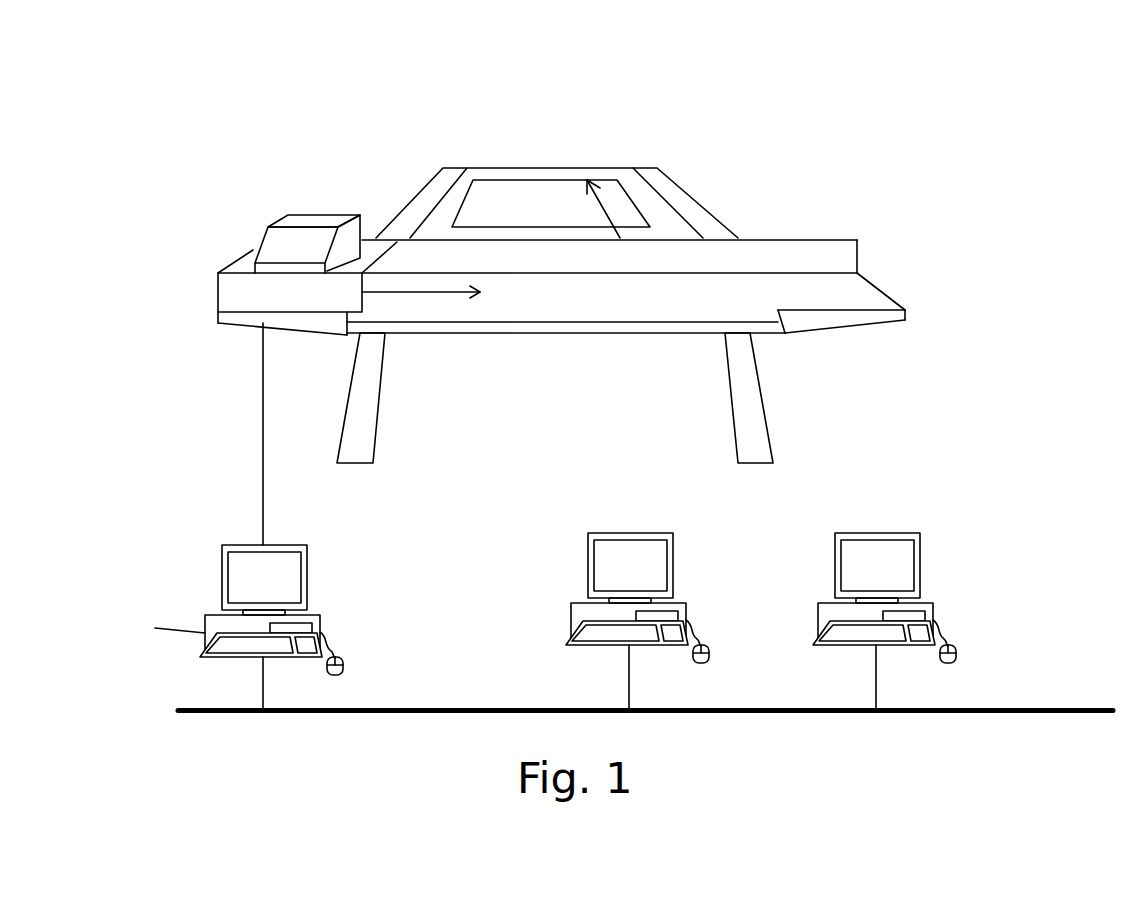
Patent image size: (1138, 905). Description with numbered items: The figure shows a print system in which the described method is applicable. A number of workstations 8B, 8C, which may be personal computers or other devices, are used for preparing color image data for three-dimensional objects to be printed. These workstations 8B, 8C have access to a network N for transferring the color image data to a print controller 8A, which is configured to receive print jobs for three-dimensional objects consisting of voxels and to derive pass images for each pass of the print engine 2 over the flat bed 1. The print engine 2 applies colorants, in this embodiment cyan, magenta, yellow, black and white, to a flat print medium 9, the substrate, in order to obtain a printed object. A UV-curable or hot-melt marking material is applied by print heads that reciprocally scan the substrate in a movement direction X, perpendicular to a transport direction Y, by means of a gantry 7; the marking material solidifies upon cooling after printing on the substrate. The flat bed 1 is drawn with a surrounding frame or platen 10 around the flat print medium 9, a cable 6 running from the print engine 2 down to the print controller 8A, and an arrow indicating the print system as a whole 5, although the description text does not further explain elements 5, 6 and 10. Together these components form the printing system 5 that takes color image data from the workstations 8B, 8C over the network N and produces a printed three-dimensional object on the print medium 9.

The flat bed 1 is at (480, 215).
The print engine 2 is at (273, 217).
The printing system 5 is at (955, 338).
The connection cable 6 is at (265, 475).
The gantry 7 is at (802, 252).
The print controller 8A is at (317, 622).
The workstation 8B is at (683, 610).
The workstation 8C is at (930, 610).
The flat print medium 9 is at (510, 190).
The platen 10 is at (392, 228).
The network N is at (1078, 708).
The movement direction X is at (413, 295).
The transport direction Y is at (605, 212).